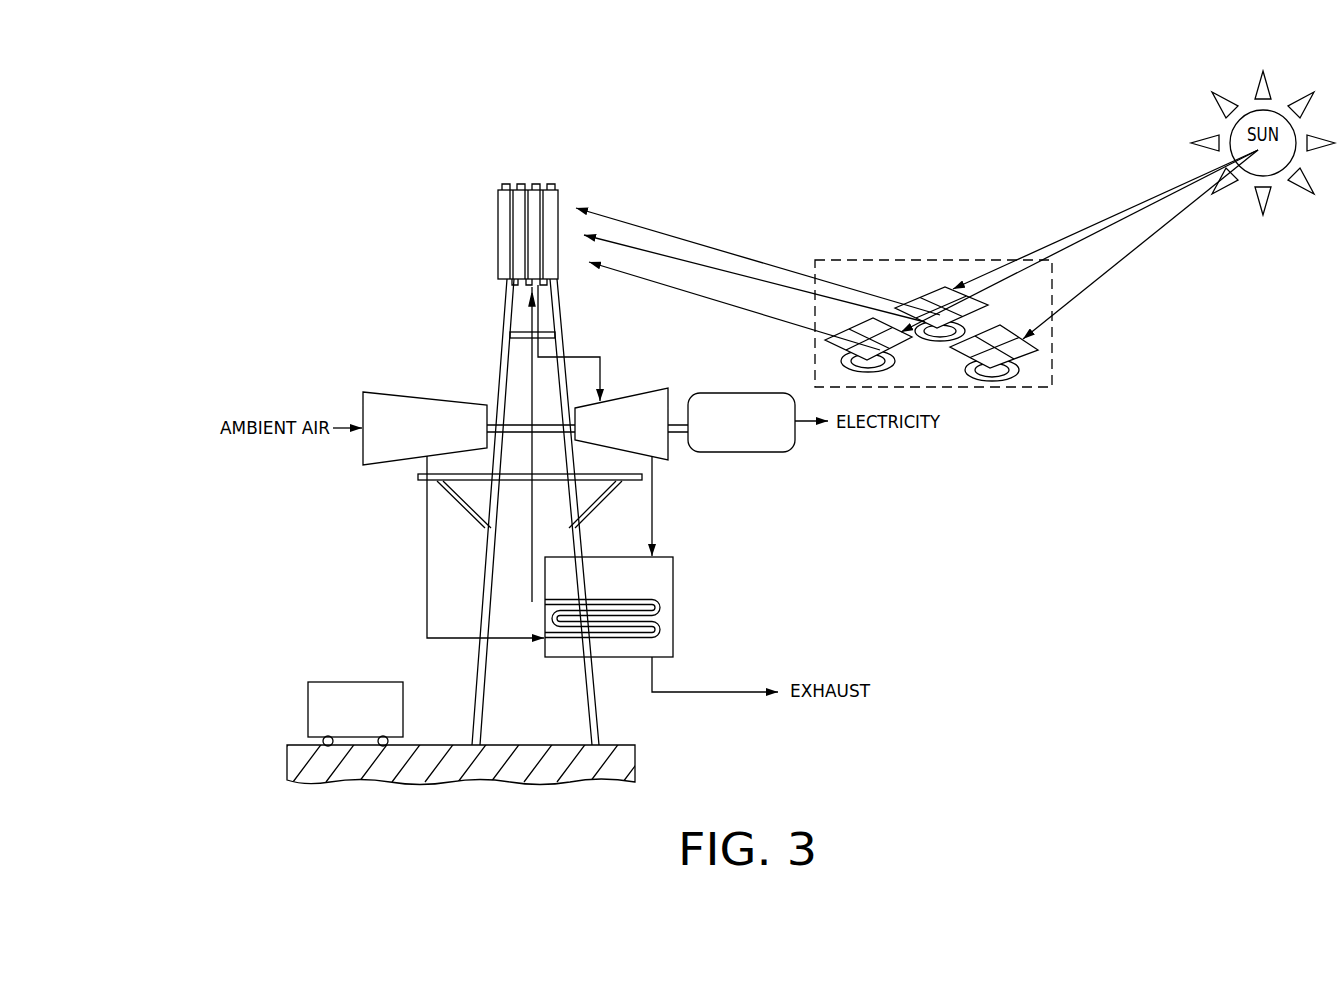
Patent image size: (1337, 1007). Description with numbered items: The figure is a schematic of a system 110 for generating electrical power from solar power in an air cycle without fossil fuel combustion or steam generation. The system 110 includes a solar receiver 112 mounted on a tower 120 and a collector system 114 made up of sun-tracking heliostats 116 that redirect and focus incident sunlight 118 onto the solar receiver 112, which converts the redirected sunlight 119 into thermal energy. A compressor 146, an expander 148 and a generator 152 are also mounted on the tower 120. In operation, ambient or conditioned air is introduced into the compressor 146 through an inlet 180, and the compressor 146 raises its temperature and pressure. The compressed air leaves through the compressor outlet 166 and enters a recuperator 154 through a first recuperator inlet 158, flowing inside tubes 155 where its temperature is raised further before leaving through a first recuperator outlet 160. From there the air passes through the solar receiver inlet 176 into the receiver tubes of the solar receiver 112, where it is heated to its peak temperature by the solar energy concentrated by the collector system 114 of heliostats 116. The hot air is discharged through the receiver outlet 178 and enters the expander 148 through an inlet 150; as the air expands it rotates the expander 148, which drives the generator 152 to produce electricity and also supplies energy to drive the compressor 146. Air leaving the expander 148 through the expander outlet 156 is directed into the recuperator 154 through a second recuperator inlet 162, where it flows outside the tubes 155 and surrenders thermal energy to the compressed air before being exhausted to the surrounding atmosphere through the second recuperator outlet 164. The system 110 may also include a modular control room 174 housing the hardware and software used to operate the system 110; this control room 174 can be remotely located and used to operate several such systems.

The system 110 is at (370, 138).
The solar receiver 112 is at (497, 237).
The collector system 114 is at (1058, 372).
The heliostats 116 is at (936, 293).
The solar radiation or sunlight 118 is at (1150, 245).
The redirected sunlight 119 is at (715, 297).
The tower 120 is at (478, 662).
The compressor 146 is at (427, 397).
The expander 148 is at (650, 392).
The expander inlet 150 is at (604, 385).
The generator 152 is at (750, 453).
The recuperator 154 is at (673, 596).
The tubes 155 is at (657, 632).
The expander outlet 156 is at (650, 462).
The recuperator inlet 158 is at (544, 646).
The recuperator outlet 160 is at (545, 606).
The recuperator inlet 162 is at (655, 553).
The recuperator outlet 164 is at (650, 672).
The compressor outlet 166 is at (425, 462).
The modular control room 174 is at (355, 682).
The solar receiver inlet 176 is at (526, 290).
The solar receiver outlet 178 is at (543, 290).
The compressor inlet 180 is at (357, 433).